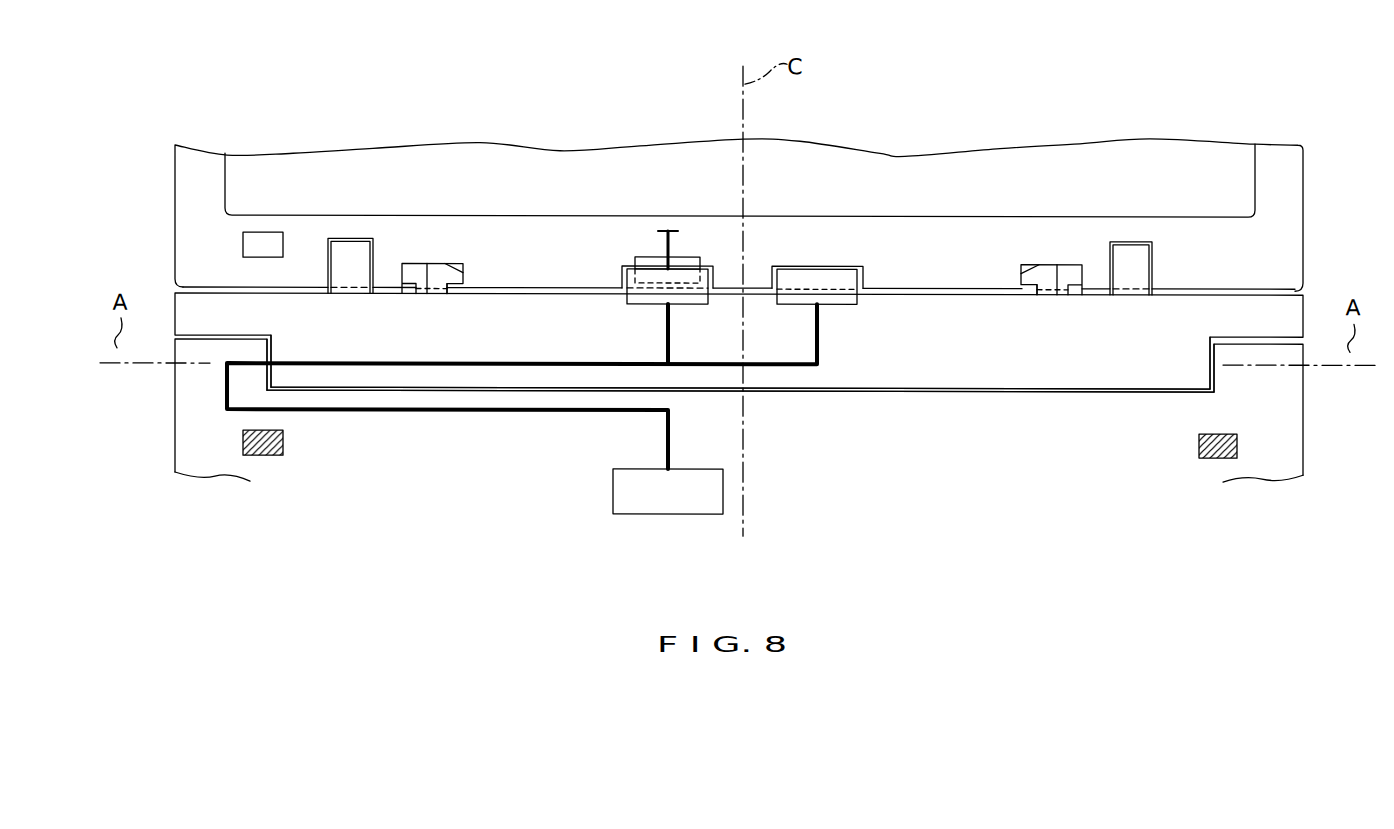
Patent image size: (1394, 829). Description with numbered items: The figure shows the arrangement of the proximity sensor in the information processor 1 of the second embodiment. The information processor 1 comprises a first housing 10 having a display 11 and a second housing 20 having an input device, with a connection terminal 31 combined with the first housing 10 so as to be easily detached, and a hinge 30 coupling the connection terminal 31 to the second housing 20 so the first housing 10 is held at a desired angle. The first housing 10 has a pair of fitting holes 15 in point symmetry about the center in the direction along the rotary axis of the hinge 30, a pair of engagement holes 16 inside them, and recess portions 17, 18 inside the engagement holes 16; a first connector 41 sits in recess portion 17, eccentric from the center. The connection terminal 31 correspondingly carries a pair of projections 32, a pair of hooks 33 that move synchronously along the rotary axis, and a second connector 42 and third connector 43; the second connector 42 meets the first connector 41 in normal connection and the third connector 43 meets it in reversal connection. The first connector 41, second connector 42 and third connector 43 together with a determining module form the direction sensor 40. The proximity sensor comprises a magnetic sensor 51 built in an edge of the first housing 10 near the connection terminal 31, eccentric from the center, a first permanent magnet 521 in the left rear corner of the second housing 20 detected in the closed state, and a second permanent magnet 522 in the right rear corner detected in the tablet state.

The information processor 1 is at (908, 152).
The first housing 10 is at (1277, 155).
The display 11 is at (1168, 150).
The fitting holes 15 is at (328, 272).
The engagement holes 16 is at (463, 268).
The recess portion 17 is at (622, 272).
The recess portion 18 is at (863, 272).
The second housing 20 is at (1283, 434).
The hinge 30 is at (270, 350).
The connection terminal 31 is at (983, 374).
The projections 32 is at (358, 255).
The hooks 33 is at (440, 277).
The direction sensor 40 is at (739, 225).
The first connector 41 is at (645, 262).
The second connector 42 is at (685, 278).
The third connector 43 is at (803, 278).
The magnetic sensor 51 is at (272, 242).
The first permanent magnet 521 is at (283, 445).
The second permanent magnet 522 is at (1199, 444).